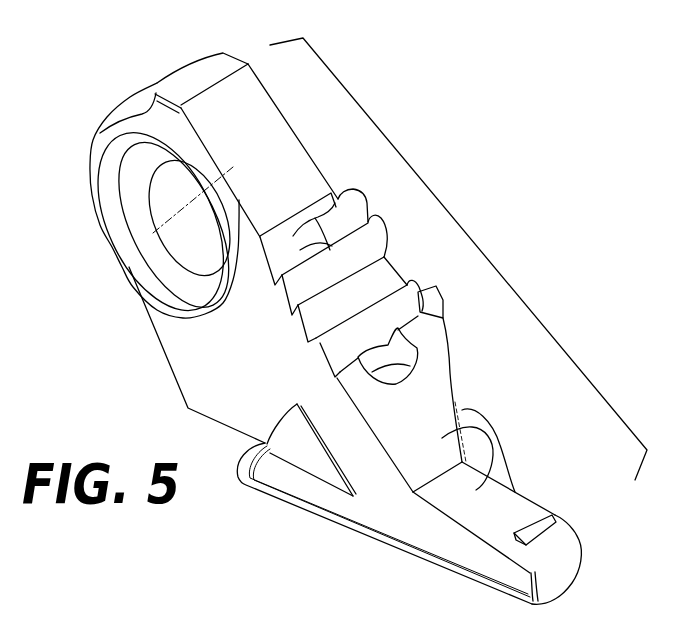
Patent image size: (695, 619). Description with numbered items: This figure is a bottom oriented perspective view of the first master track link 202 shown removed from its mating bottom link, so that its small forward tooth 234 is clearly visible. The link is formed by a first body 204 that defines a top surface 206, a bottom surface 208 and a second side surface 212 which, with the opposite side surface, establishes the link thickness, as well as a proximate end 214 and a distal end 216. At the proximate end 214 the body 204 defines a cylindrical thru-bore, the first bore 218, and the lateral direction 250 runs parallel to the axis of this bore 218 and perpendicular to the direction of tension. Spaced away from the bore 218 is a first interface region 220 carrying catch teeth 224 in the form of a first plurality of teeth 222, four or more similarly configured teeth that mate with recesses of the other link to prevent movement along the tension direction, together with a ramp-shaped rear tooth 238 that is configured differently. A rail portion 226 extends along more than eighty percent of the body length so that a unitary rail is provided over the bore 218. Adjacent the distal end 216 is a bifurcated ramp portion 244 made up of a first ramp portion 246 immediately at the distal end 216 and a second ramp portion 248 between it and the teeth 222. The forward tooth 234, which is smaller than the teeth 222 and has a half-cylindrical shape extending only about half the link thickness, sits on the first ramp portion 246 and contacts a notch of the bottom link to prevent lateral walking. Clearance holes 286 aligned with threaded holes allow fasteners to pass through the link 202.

The first master track link 202 is at (418, 150).
The first body 204 is at (446, 371).
The top surface 206 is at (326, 527).
The bottom surface 208 is at (186, 83).
The second side surface 212 is at (227, 389).
The proximate end 214 is at (92, 183).
The distal end 216 is at (578, 570).
The first bore 218 is at (209, 212).
The first interface region 220 is at (460, 217).
The first plurality of teeth 222 is at (380, 232).
The catch teeth 224 is at (410, 296).
The rail portion 226 is at (378, 538).
The forward tooth 234 is at (557, 518).
The rear tooth 238 is at (357, 376).
The bifurcated ramp portion 244 is at (490, 437).
The first ramp portion 246 is at (475, 520).
The second ramp portion 248 is at (397, 420).
The lateral direction 250 is at (174, 230).
The clearance holes 286 is at (333, 203).